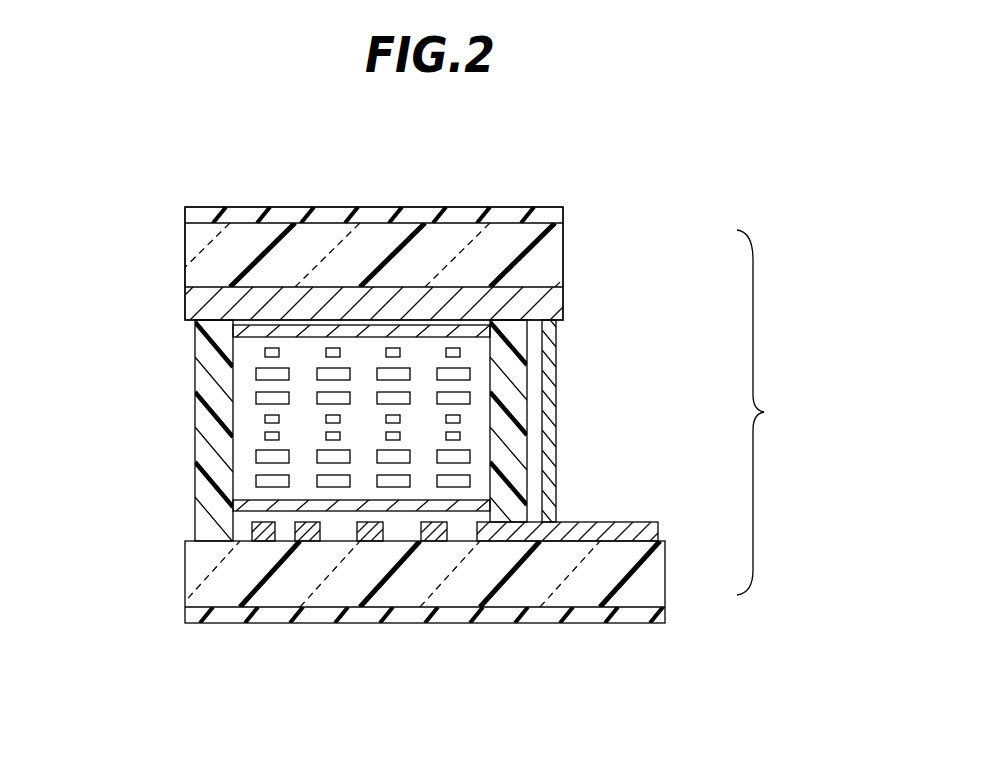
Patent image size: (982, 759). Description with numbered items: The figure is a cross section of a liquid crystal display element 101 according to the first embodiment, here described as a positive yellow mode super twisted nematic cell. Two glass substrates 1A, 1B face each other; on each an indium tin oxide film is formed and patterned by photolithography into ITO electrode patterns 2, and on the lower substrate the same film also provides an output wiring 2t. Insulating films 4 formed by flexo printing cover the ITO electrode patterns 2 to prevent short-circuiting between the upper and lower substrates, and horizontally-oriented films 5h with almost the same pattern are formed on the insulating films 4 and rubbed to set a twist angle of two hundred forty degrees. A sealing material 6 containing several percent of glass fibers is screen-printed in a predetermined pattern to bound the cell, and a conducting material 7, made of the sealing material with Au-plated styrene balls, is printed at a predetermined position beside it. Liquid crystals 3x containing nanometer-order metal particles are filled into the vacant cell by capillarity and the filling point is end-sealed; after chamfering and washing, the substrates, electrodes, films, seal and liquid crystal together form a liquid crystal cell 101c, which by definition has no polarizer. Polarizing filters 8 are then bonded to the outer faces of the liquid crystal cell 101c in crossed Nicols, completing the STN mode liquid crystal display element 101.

The liquid crystal display element 101 is at (177, 160).
The liquid crystal cell 101c is at (786, 412).
The glass substrate 1A is at (656, 580).
The glass substrate 1B is at (550, 243).
The ITO electrode pattern 2 is at (188, 299).
The output wiring 2t is at (656, 533).
The liquid crystals 3x is at (467, 458).
The insulating film 4 is at (232, 330).
The horizontally-oriented film 5h is at (240, 326).
The sealing material 6 is at (205, 456).
The conducting material 7 is at (548, 400).
The polarizing filter 8 is at (187, 214).